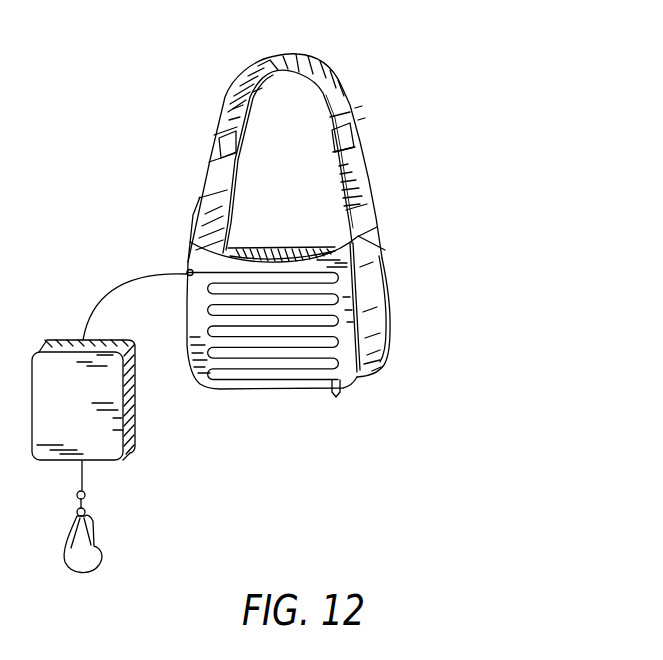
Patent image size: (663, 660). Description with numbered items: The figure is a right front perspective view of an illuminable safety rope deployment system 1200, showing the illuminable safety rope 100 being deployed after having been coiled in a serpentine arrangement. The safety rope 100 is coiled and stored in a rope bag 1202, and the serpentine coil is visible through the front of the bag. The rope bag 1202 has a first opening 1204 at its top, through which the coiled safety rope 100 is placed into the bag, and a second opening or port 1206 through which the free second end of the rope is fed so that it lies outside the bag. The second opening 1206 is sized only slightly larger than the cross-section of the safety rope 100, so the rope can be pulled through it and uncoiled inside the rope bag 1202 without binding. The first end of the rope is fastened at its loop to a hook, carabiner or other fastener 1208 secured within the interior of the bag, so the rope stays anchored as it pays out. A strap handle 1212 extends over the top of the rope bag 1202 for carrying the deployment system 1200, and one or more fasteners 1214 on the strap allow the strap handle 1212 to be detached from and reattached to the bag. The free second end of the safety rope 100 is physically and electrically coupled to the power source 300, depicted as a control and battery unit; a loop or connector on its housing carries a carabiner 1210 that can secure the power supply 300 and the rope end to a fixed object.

The illuminable safety rope deployment system 1200 is at (333, 536).
The rope bag 1202 is at (392, 283).
The first opening 1204 is at (245, 246).
The second opening 1206 is at (188, 272).
The fastener 1208 is at (337, 398).
The illuminable safety rope 100 is at (252, 375).
The strap handle 1212 is at (342, 83).
The fastener 1214 is at (354, 137).
The power source 300 is at (117, 461).
The carabiner 1210 is at (102, 560).